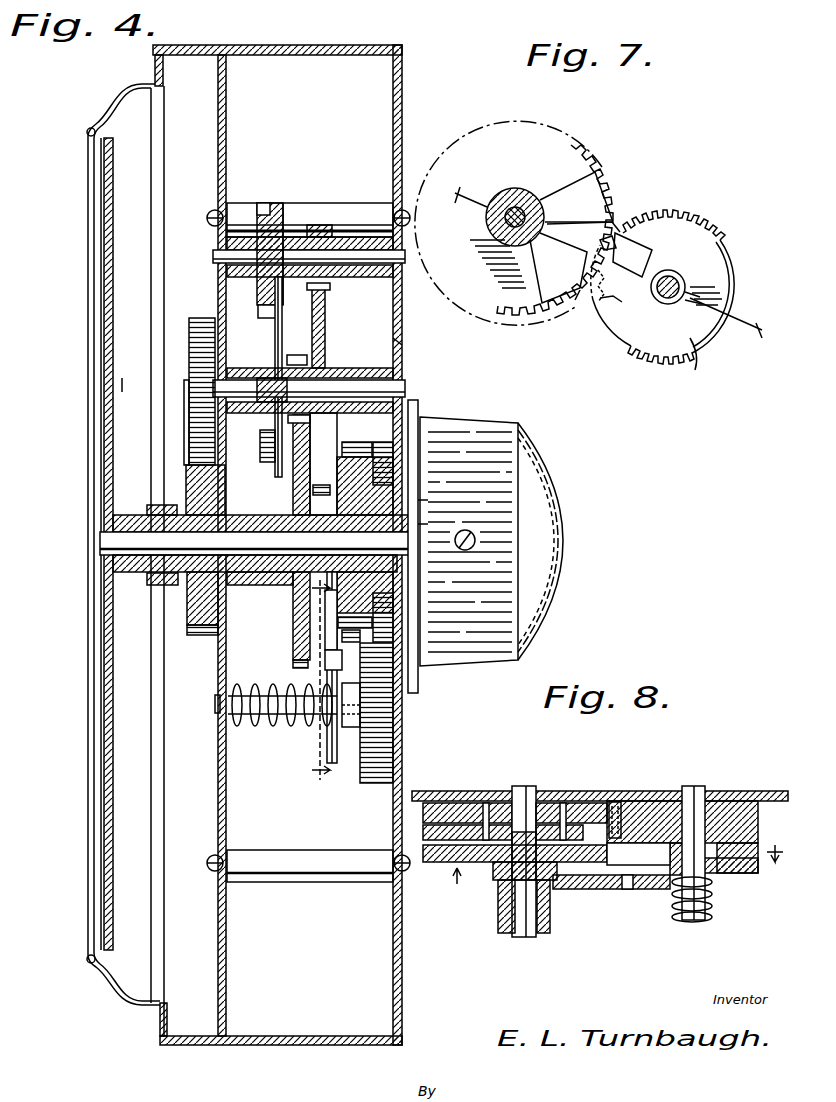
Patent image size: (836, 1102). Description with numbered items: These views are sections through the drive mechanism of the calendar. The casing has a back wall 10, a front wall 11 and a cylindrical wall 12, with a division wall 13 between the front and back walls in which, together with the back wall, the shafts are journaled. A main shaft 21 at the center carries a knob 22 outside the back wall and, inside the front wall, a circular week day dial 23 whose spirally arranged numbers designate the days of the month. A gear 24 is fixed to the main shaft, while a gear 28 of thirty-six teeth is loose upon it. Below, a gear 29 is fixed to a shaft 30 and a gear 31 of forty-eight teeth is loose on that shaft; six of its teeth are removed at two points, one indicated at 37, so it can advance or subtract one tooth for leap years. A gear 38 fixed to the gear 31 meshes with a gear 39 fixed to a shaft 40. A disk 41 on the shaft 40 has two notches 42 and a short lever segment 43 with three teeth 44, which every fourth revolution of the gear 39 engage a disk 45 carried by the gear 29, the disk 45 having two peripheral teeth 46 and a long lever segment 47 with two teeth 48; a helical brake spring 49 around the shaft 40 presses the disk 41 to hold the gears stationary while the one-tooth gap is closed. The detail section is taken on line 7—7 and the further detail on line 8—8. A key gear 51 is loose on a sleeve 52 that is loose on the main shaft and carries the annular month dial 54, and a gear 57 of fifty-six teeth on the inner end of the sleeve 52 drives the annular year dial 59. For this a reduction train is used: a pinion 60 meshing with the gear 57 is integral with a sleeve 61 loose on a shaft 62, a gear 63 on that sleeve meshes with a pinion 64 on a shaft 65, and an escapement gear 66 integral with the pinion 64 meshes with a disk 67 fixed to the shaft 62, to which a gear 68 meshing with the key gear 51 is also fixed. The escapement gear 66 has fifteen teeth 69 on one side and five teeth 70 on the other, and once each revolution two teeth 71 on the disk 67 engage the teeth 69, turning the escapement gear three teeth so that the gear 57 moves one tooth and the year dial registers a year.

In FIG. 4, the section line 7— 7 is at (321, 685).
In FIG. 7, the section line 8— 8 is at (611, 258).
In FIG. 4, the back wall 10 is at (403, 148).
In FIG. 7, the back wall 10 is at (405, 147).
In FIG. 8, the back wall 10 is at (756, 791).
In FIG. 4, the front wall 11 is at (95, 262).
In FIG. 8, the front wall 11 is at (625, 872).
In FIG. 4, the cylindrical wall 12 is at (283, 45).
In FIG. 4, the division wall 13 is at (218, 152).
In FIG. 4, the main shaft 21 is at (104, 540).
In FIG. 4, the knob 22 is at (547, 491).
In FIG. 4, the week day dial 23 is at (120, 385).
In FIG. 4, the gear 24 is at (417, 526).
In FIG. 4, the gear 28 is at (417, 500).
In FIG. 4, the gear 29 is at (362, 454).
In FIG. 7, the gear 29 is at (560, 149).
In FIG. 8, the gear 29 is at (559, 802).
In FIG. 8, the shaft 30 is at (528, 790).
In FIG. 8, the gear 31 is at (503, 802).
In FIG. 4, the point of removed teeth 37 is at (355, 443).
In FIG. 4, the gear 38 is at (415, 431).
In FIG. 8, the gear 38 is at (467, 802).
In FIG. 4, the gear 39 is at (393, 768).
In FIG. 7, the gear 39 is at (724, 238).
In FIG. 8, the gear 39 is at (652, 802).
In FIG. 4, the shaft 40 is at (217, 712).
In FIG. 7, the shaft 40 is at (676, 280).
In FIG. 8, the shaft 40 is at (697, 788).
In FIG. 4, the disk 41 is at (337, 745).
In FIG. 7, the disk 41 is at (696, 363).
In FIG. 8, the disk 41 is at (747, 874).
In FIG. 7, the notches 42 is at (620, 236).
In FIG. 4, the short lever segment 43 is at (330, 668).
In FIG. 7, the short lever segment 43 is at (641, 259).
In FIG. 8, the short lever segment 43 is at (657, 890).
In FIG. 7, the teeth 44 is at (600, 300).
In FIG. 4, the disk 45 is at (330, 628).
In FIG. 7, the disk 45 is at (555, 200).
In FIG. 8, the disk 45 is at (598, 890).
In FIG. 7, the teeth 46 is at (614, 222).
In FIG. 4, the long lever segment 47 is at (330, 635).
In FIG. 7, the long lever segment 47 is at (535, 268).
In FIG. 8, the long lever segment 47 is at (573, 890).
In FIG. 7, the teeth 48 is at (592, 228).
In FIG. 4, the helical brake spring 49 is at (258, 727).
In FIG. 7, the helical brake spring 49 is at (684, 302).
In FIG. 8, the helical brake spring 49 is at (710, 906).
In FIG. 4, the key gear 51 is at (205, 492).
In FIG. 4, the sleeve 52 is at (185, 496).
In FIG. 4, the annular month dial 54 is at (108, 180).
In FIG. 4, the gear 57 is at (294, 593).
In FIG. 4, the annular year dial 59 is at (100, 290).
In FIG. 4, the pinion 60 is at (304, 356).
In FIG. 4, the sleeve 61 is at (408, 348).
In FIG. 4, the shaft 62 is at (344, 380).
In FIG. 4, the gear 63 is at (316, 318).
In FIG. 4, the pinion 64 is at (330, 222).
In FIG. 4, the shaft 65 is at (214, 255).
In FIG. 4, the escapement gear 66 is at (268, 203).
In FIG. 4, the disk 67 is at (274, 339).
In FIG. 4, the gear 68 is at (198, 330).
In FIG. 4, the teeth 69 is at (258, 205).
In FIG. 4, the teeth 70 is at (284, 208).
In FIG. 4, the teeth 71 is at (260, 436).